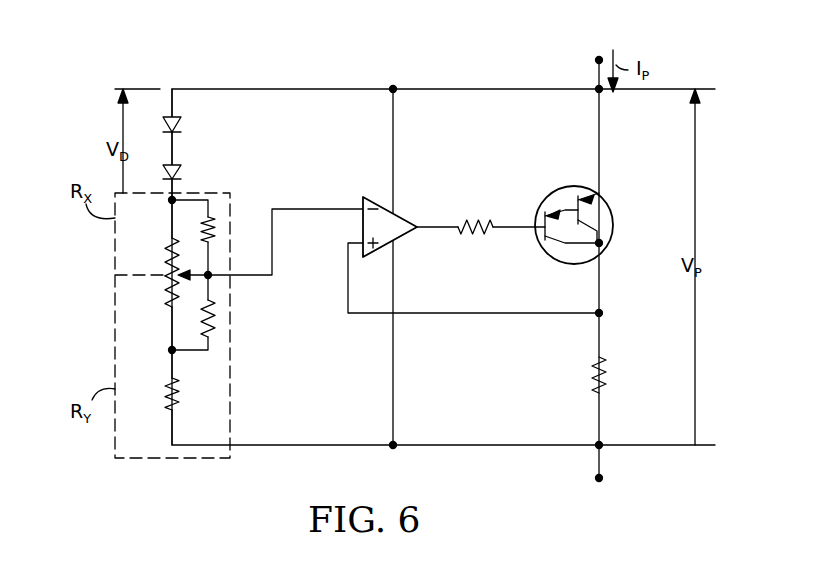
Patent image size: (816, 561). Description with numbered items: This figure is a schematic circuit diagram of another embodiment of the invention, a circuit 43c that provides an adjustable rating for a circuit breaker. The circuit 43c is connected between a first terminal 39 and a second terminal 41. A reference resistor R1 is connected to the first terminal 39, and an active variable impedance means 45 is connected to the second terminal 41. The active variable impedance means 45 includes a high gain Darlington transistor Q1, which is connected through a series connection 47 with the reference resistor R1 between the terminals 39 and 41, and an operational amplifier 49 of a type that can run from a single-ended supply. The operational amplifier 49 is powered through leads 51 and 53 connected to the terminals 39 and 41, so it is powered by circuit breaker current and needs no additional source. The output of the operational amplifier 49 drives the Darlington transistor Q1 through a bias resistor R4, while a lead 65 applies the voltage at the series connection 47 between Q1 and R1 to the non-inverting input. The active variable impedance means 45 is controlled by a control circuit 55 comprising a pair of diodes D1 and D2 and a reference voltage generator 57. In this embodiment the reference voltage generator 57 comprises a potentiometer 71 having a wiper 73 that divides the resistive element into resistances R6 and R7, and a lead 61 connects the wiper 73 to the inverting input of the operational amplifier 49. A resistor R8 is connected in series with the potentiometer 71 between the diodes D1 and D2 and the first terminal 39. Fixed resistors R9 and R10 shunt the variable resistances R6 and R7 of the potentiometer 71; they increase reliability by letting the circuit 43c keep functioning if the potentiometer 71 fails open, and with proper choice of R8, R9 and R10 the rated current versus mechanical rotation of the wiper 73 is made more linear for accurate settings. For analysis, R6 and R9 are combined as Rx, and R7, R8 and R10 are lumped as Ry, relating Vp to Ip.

The circuit 43c is at (372, 70).
The diode D1 is at (178, 129).
The diode D2 is at (178, 176).
The fixed resistor R9 is at (212, 214).
The fixed resistor R10 is at (214, 331).
The resistance R6 is at (170, 247).
The resistance R7 is at (164, 288).
The resistor R8 is at (180, 382).
The potentiometer 71 is at (172, 272).
The wiper 73 is at (210, 279).
The reference voltage generator 57 is at (150, 316).
The control circuit 55 is at (233, 176).
The operational amplifier 49 is at (398, 219).
The lead 61 is at (340, 209).
The lead 53 is at (396, 156).
The lead 51 is at (393, 396).
The lead 65 is at (450, 313).
The series connection 47 is at (606, 316).
The bias resistor R4 is at (462, 221).
The Darlington transistor Q1 is at (612, 236).
The active variable impedance means 45 is at (603, 176).
The second terminal 41 is at (599, 60).
The reference resistor R1 is at (606, 380).
The first terminal 39 is at (602, 479).